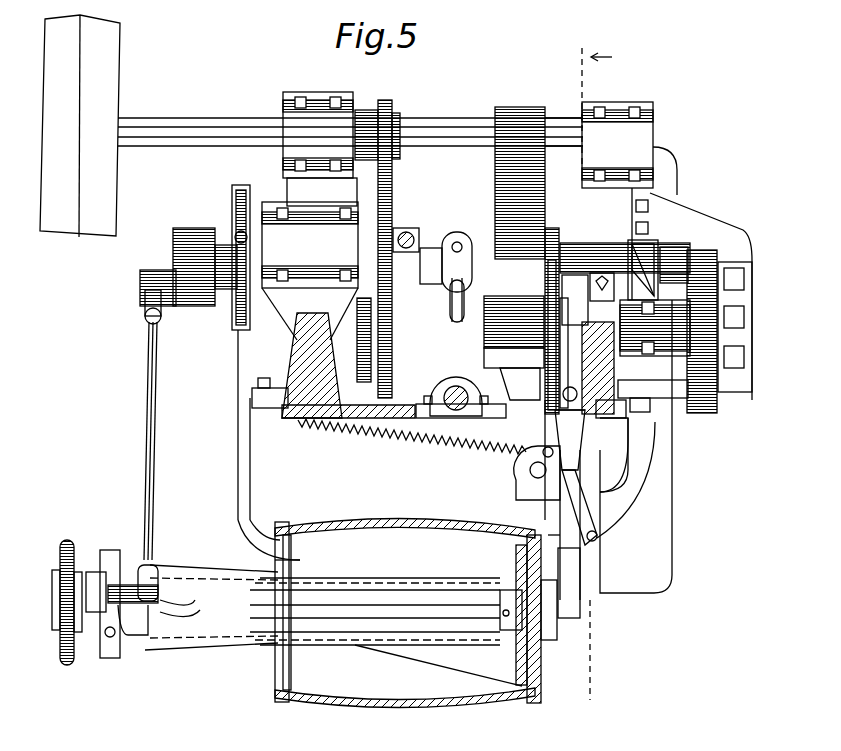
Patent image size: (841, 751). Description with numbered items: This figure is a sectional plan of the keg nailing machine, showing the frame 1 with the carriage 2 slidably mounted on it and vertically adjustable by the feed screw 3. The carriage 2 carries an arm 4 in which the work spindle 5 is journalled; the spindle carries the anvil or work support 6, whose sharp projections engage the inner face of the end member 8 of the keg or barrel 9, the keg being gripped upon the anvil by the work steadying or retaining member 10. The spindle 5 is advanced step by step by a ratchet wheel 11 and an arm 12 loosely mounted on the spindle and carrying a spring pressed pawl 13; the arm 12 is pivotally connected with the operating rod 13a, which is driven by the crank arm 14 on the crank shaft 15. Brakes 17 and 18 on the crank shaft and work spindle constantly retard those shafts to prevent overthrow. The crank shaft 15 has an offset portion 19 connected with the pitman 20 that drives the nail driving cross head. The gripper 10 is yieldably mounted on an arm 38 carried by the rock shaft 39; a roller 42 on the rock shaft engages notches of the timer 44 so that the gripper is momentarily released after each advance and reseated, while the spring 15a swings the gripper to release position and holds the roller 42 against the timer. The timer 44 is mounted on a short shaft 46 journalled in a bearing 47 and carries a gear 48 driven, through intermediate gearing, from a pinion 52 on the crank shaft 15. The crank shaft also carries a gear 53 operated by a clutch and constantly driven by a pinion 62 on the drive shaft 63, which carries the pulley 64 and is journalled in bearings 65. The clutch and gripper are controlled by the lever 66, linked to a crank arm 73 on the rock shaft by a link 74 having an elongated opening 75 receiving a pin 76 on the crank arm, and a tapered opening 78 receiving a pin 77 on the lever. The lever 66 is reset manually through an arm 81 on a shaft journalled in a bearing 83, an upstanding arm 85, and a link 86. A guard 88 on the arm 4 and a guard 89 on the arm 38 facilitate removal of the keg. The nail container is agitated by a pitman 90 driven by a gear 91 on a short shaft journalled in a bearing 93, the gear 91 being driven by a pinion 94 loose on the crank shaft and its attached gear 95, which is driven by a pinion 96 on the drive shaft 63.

The frame 1 is at (305, 348).
The carriage 2 is at (375, 561).
The feed screw 3 is at (446, 396).
The arm 4 is at (166, 652).
The work spindle 5 is at (512, 616).
The anvil or work support 6 is at (500, 556).
The end member 8 is at (540, 690).
The keg or barrel 9 is at (372, 522).
The work steadying or retaining member 10 is at (548, 628).
The ratchet wheel 11 is at (112, 552).
The arm 12 is at (126, 575).
The spring pressed pawl 13 is at (100, 640).
The operating rod 13a is at (156, 410).
The crank arm 14 is at (178, 250).
The crank shaft 15 is at (228, 290).
The spring 15a is at (420, 440).
The brake 17 is at (232, 225).
The brake 18 is at (58, 578).
The offset portion 19 is at (433, 298).
The pitman 20 is at (453, 330).
The arm 38 is at (572, 586).
The rock shaft 39 is at (540, 478).
The roller 42 is at (580, 446).
The timer 44 is at (550, 228).
The short shaft 46 is at (585, 332).
The bearing 47 is at (718, 345).
The gear 48 is at (718, 262).
The pinion 52 is at (690, 248).
The gear 53 is at (494, 196).
The pinion 62 is at (527, 110).
The drive shaft 63 is at (455, 132).
The pulley 64 is at (118, 212).
The bearings 65 is at (666, 130).
The lever 66 is at (612, 372).
The crank arm 73 is at (525, 456).
The link 74 is at (600, 455).
The elongated opening 75 is at (597, 540).
The pin 76 is at (615, 498).
The pin 77 is at (630, 416).
The tapered opening 78 is at (600, 410).
The arm 81 is at (672, 258).
The bearing 83 is at (650, 245).
The upstanding arm 85 is at (578, 250).
The link 86 is at (550, 322).
The guard 88 is at (398, 655).
The guard 89 is at (565, 595).
The pitman 90 is at (412, 236).
The gear 91 is at (393, 200).
The bearing 93 is at (310, 245).
The pinion 94 is at (386, 290).
The gear 95 is at (345, 186).
The pinion 96 is at (364, 114).